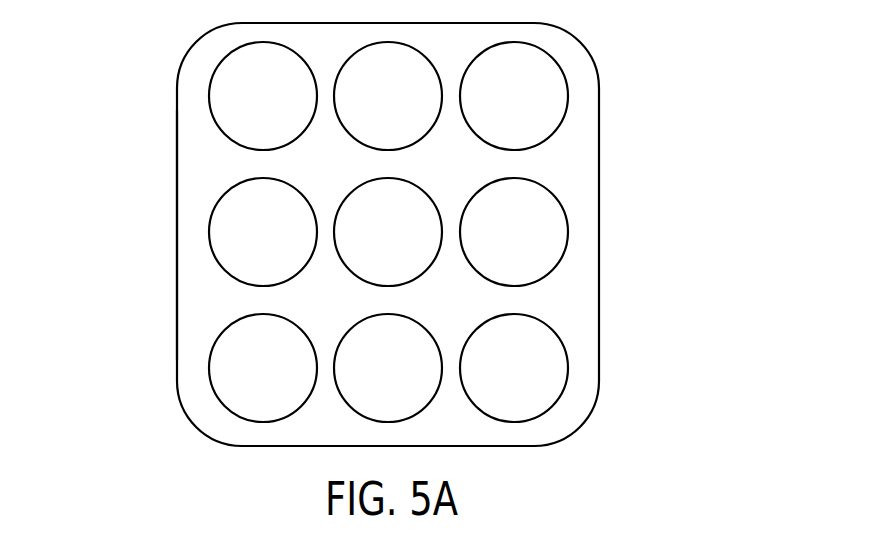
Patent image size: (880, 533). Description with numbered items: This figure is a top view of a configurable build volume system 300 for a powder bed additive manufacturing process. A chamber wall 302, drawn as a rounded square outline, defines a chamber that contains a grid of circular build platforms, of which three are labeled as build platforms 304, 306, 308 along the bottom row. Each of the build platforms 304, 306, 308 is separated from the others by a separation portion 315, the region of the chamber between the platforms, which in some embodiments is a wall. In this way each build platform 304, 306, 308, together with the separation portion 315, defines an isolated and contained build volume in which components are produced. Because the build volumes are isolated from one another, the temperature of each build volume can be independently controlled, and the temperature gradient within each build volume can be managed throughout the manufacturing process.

The configurable build volume system 300 is at (684, 92).
The chamber wall 302 is at (177, 133).
The build platform 304 is at (246, 365).
The build platform 306 is at (400, 357).
The build platform 308 is at (536, 355).
The separation portion 315 is at (570, 292).